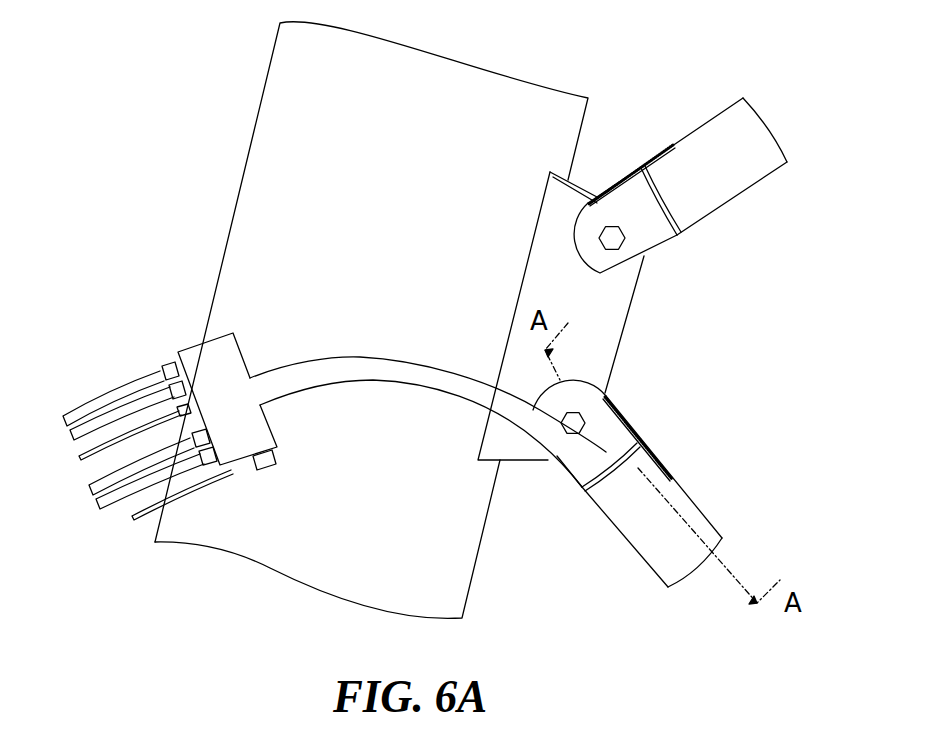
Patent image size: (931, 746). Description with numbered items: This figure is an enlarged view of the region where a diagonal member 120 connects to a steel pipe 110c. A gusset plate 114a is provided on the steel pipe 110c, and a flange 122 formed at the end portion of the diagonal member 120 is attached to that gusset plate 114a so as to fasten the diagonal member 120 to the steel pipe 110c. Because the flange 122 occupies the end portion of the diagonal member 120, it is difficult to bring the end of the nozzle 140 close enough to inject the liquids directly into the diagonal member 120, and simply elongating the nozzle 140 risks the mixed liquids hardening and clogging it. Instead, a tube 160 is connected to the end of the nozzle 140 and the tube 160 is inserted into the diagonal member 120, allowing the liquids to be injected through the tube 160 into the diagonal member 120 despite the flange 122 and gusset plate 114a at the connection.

The steel pipe 110c is at (253, 172).
The gusset plate 114a is at (613, 312).
The diagonal member 120 is at (635, 548).
The flange 122 is at (627, 423).
The nozzle 140 is at (185, 343).
The tube 160 is at (340, 357).